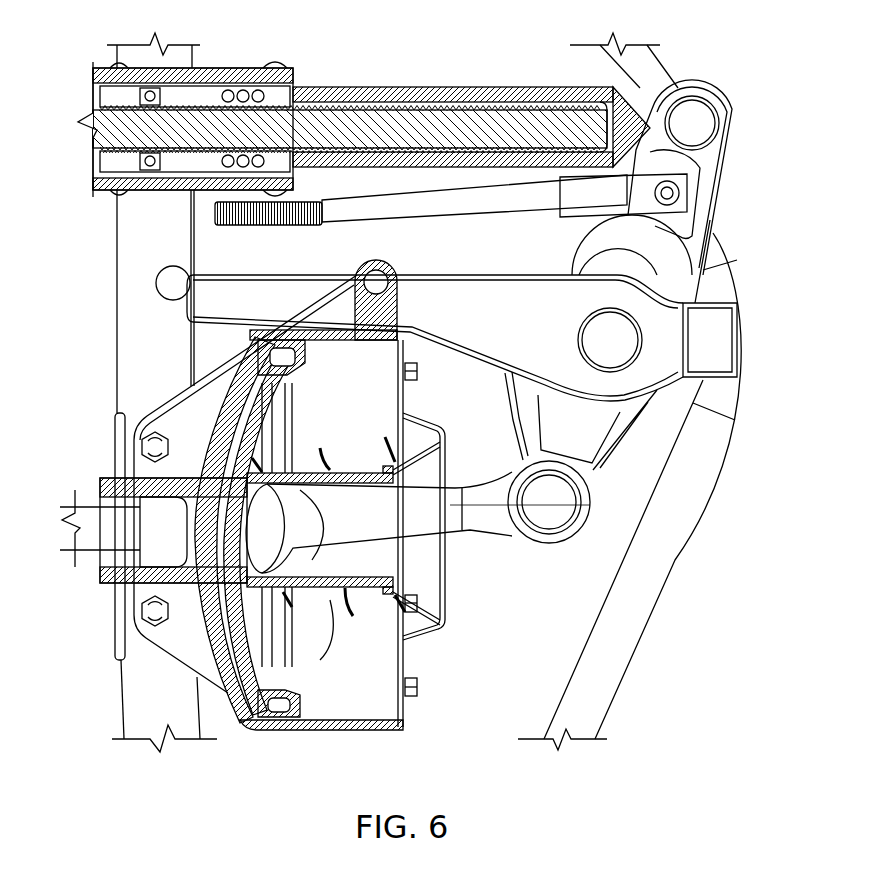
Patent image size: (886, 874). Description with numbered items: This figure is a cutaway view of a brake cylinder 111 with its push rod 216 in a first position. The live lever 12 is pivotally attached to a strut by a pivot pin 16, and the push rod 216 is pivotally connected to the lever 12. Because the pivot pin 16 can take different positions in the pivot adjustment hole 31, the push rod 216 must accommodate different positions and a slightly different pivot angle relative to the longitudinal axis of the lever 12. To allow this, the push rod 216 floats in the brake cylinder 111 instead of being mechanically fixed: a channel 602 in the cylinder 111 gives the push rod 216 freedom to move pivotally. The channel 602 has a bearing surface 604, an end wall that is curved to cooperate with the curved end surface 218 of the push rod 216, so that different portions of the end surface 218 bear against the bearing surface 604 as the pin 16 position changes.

The live lever 12 is at (586, 444).
The pivot pin 16 is at (625, 354).
The pivot adjustment hole 31 is at (712, 287).
The brake cylinder 111 is at (418, 392).
The push rod 216 is at (387, 528).
The end surface 218 is at (293, 604).
The channel 602 is at (387, 568).
The bearing surface 604 is at (288, 455).